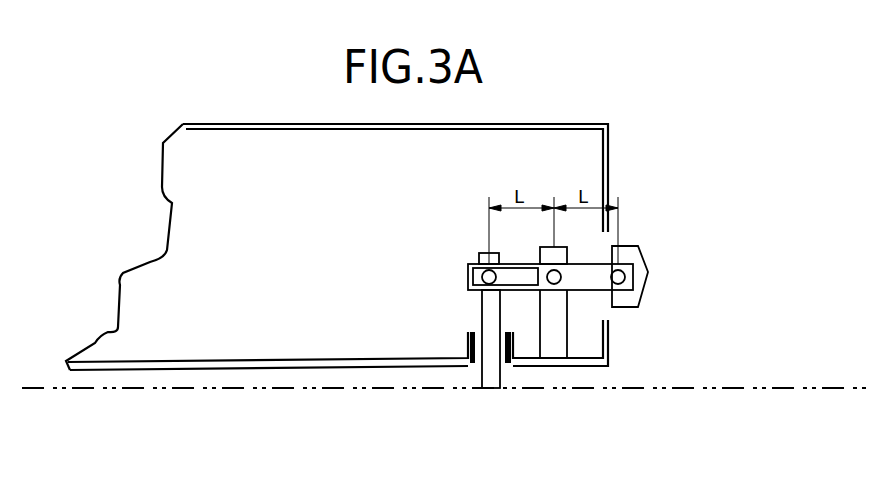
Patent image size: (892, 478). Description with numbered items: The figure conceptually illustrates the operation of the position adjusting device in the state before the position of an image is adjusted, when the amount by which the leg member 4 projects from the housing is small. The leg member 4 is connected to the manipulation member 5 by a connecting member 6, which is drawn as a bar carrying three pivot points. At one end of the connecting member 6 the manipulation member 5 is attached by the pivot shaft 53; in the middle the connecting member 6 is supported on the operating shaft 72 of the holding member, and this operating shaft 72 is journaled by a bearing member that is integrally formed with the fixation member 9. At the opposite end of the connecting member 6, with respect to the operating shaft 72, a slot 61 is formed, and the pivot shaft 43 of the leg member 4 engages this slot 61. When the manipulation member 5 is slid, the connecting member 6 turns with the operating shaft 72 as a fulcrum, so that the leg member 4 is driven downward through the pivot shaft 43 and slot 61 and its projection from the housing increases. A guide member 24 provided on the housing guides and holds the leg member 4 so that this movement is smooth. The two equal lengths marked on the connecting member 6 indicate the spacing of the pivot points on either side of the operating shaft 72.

The leg member 4 is at (492, 378).
The manipulation member 5 is at (628, 255).
The connecting member 6 is at (585, 282).
The fixation member 9 is at (560, 333).
The guide member 24 is at (467, 348).
The pivot shaft 43 is at (482, 275).
The pivot shaft 53 is at (622, 277).
The slot 61 is at (522, 275).
The operating shaft 72 is at (553, 290).